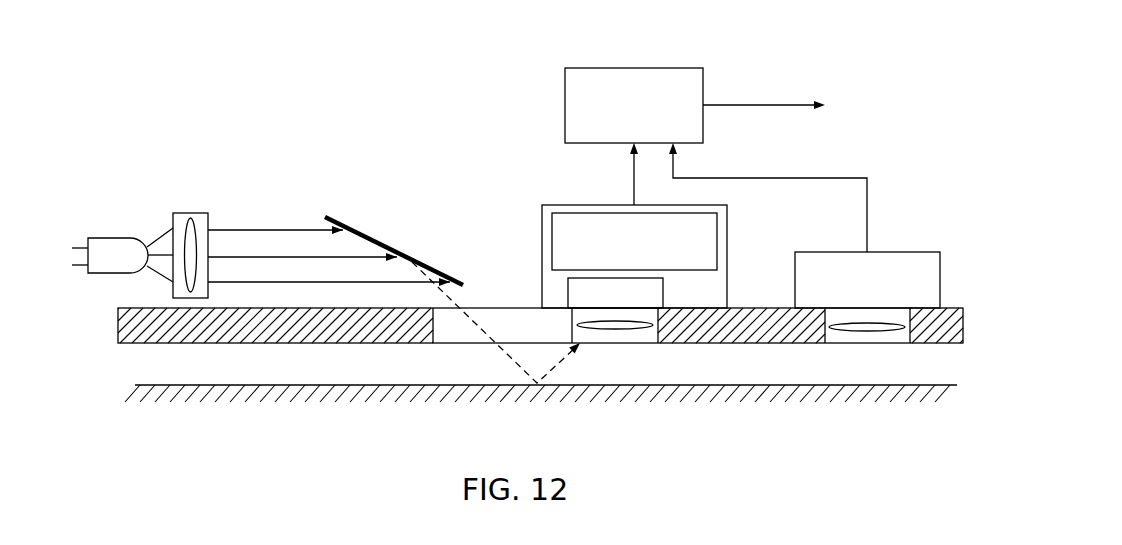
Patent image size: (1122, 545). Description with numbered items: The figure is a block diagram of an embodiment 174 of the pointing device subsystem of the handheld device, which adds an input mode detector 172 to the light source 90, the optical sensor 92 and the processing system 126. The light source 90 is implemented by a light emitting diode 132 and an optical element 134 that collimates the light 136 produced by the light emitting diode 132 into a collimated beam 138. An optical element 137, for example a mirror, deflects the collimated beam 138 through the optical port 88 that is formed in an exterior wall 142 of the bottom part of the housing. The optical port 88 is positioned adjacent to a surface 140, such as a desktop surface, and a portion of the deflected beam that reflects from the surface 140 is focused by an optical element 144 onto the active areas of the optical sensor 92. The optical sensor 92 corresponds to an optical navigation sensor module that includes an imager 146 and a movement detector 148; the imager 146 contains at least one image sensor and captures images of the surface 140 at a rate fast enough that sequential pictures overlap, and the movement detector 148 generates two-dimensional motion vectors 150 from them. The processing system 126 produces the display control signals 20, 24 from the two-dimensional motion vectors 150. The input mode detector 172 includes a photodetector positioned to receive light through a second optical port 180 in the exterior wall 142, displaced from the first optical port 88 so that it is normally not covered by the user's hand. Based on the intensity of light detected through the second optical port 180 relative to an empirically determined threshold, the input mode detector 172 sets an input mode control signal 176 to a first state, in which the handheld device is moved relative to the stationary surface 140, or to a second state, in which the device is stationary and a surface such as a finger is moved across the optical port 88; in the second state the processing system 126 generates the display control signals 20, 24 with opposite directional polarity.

The pointing device subsystem embodiment 174 is at (273, 70).
The light source 90 is at (98, 188).
The light emitting diode 132 is at (117, 237).
The light 136 is at (150, 275).
The optical element 134 is at (192, 212).
The collimated beam 138 is at (255, 230).
The optical element 137 is at (387, 233).
The optical port 88 is at (433, 306).
The exterior wall 142 is at (138, 345).
The optical element 144 is at (615, 344).
The second optical port 180 is at (883, 345).
The surface 140 is at (702, 385).
The optical sensor 92 is at (541, 203).
The movement detector 148 is at (552, 243).
The imager 146 is at (567, 290).
The processing system 126 is at (634, 65).
The two-dimensional motion vectors 150 is at (632, 185).
The input mode control signal 176 is at (731, 178).
The display control signal 20 is at (806, 102).
The display control signal 24 is at (727, 105).
The input mode detector 172 is at (906, 252).